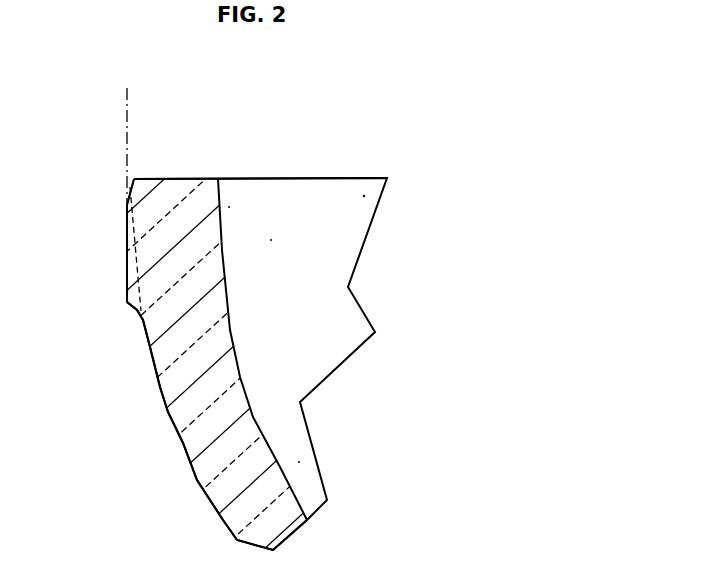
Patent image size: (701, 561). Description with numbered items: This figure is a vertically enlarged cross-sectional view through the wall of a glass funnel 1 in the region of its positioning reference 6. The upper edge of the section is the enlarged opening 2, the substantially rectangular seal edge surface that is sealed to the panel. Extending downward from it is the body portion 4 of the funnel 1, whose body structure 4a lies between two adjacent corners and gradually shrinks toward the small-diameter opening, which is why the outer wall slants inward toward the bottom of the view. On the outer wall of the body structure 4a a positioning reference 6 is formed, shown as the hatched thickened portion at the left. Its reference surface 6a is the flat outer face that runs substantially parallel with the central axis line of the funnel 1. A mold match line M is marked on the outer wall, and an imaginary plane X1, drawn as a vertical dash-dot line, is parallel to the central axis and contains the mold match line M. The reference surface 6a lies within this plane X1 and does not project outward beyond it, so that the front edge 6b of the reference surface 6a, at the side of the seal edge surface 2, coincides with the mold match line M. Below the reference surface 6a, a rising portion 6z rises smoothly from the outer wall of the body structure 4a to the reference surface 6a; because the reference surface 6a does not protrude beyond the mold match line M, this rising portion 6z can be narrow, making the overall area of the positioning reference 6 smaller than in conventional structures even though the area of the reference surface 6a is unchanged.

The funnel 1 is at (257, 320).
The enlarged opening (seal edge surface) 2 is at (186, 178).
The body portion 4 is at (191, 481).
The body structure 4a is at (153, 375).
The positioning reference 6 is at (127, 281).
The reference surface 6a is at (127, 258).
The front edge 6b is at (89, 249).
The rising portion 6z is at (133, 318).
The mold match line M is at (127, 206).
The imaginary plane X1 is at (127, 131).